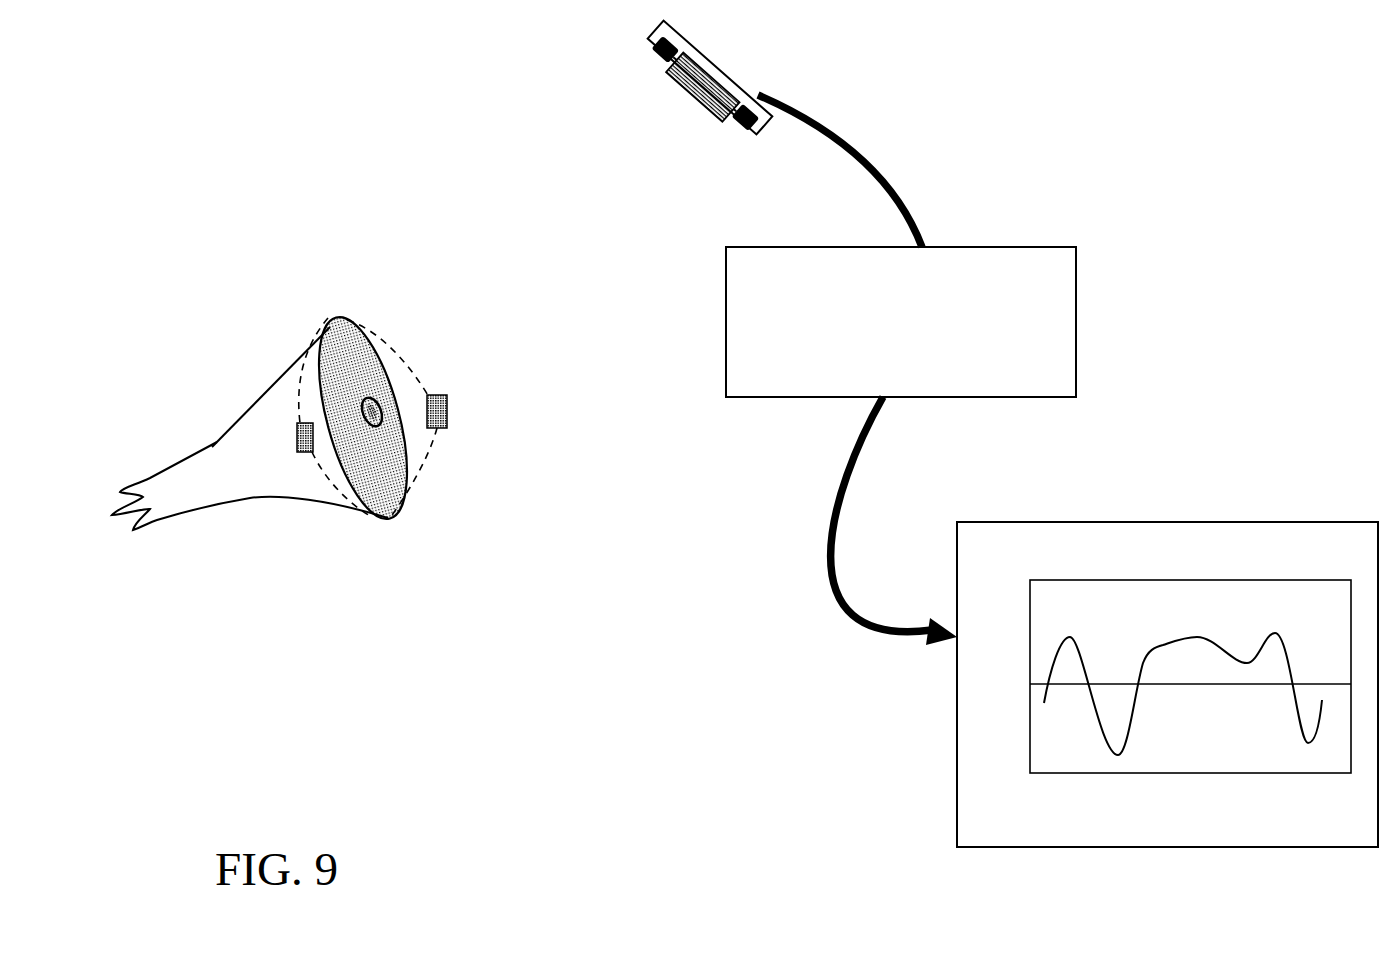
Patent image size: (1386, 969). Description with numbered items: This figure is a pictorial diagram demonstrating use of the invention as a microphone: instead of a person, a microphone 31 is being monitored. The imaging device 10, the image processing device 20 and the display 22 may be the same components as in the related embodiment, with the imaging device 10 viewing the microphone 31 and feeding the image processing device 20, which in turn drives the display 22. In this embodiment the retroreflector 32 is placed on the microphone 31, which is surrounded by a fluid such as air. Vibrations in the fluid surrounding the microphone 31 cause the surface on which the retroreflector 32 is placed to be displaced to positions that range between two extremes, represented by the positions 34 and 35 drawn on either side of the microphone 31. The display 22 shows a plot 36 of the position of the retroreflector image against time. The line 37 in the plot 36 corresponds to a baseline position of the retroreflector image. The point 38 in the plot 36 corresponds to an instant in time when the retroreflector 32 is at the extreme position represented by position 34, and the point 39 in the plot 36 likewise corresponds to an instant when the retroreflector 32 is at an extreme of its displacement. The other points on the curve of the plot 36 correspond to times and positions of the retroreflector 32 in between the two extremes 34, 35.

The imaging device 10 is at (750, 75).
The image processing device 20 is at (1007, 247).
The display 22 is at (1268, 523).
The microphone 31 is at (213, 443).
The retroreflector 32 is at (359, 448).
The extreme position 34 is at (448, 403).
The extreme position 35 is at (297, 425).
The plot 36 is at (1145, 624).
The line 37 is at (1192, 686).
The point 38 is at (1272, 633).
The point 39 is at (1125, 756).